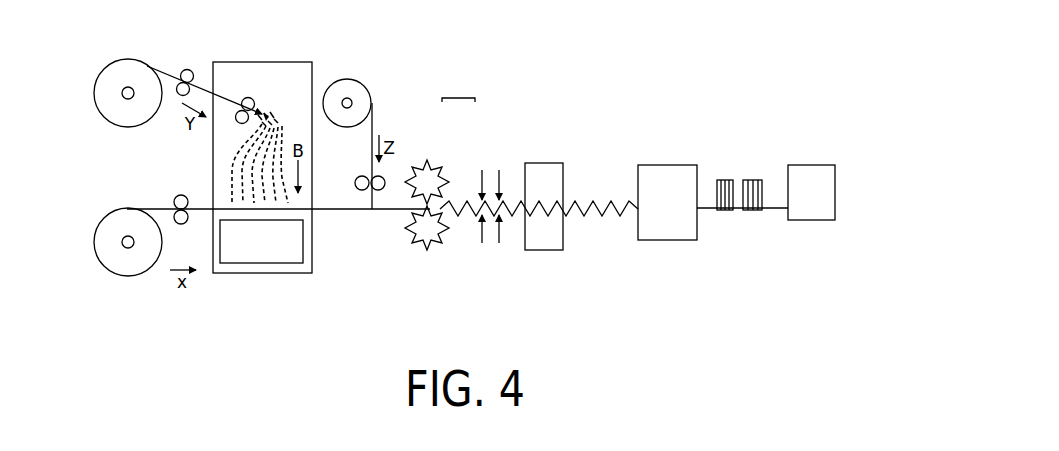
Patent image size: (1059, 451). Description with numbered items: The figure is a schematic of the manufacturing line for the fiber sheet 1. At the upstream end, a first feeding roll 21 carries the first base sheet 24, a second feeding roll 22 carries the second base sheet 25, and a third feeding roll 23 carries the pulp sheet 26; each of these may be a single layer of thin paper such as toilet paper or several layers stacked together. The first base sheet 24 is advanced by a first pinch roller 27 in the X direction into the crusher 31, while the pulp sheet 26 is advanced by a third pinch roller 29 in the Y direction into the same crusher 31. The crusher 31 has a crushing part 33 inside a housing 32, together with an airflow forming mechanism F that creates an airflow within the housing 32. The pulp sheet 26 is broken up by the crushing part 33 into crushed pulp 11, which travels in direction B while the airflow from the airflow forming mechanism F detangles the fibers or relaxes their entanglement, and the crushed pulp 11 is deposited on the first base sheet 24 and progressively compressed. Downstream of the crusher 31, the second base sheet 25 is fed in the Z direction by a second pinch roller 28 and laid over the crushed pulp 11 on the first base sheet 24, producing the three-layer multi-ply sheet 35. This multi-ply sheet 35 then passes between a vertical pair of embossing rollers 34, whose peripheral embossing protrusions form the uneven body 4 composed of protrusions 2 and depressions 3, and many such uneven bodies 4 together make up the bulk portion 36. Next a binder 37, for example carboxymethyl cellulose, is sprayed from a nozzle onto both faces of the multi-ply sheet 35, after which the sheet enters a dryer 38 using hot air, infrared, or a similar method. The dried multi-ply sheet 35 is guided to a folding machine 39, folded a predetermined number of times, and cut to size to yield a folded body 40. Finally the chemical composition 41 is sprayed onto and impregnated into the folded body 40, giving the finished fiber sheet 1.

The fiber sheet 1 is at (812, 170).
The protrusions 2 is at (453, 203).
The depressions 3 is at (458, 205).
The uneven body 4 is at (458, 88).
The crushed pulp 11 is at (273, 116).
The first feeding roll 21 is at (127, 262).
The second feeding roll 22 is at (355, 92).
The third feeding roll 23 is at (128, 72).
The first base sheet 24 is at (162, 208).
The second base sheet 25 is at (372, 150).
The pulp sheet 26 is at (167, 73).
The first pinch roller 27 is at (181, 195).
The second pinch roller 28 is at (376, 191).
The third pinch roller 29 is at (187, 69).
The crusher 31 is at (265, 59).
The housing 32 is at (297, 72).
The crushing part 33 is at (247, 97).
The embossing rollers 34 is at (418, 172).
The multi-ply sheet 35 is at (388, 212).
The bulk portion 36 is at (467, 207).
The binder 37 is at (484, 174).
The dryer 38 is at (550, 170).
The folding machine 39 is at (669, 172).
The folded body 40 is at (723, 212).
The chemical composition 41 is at (724, 176).
The airflow forming mechanism F is at (262, 255).